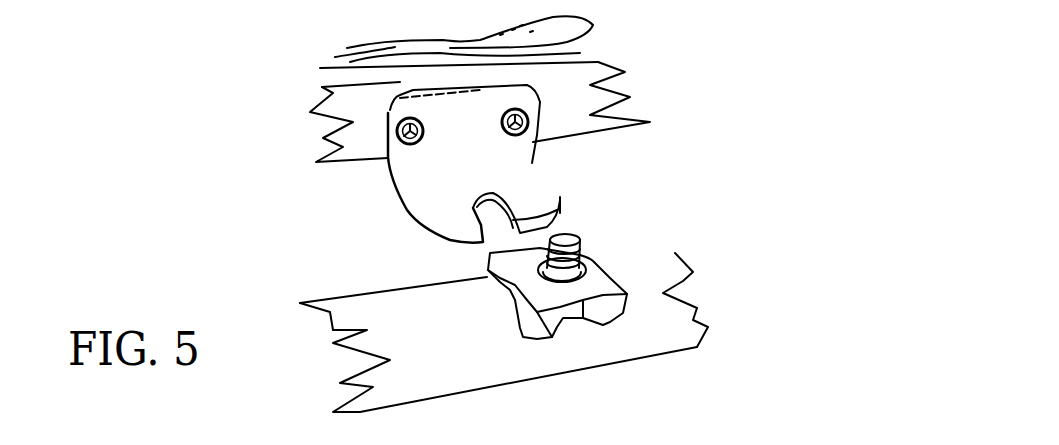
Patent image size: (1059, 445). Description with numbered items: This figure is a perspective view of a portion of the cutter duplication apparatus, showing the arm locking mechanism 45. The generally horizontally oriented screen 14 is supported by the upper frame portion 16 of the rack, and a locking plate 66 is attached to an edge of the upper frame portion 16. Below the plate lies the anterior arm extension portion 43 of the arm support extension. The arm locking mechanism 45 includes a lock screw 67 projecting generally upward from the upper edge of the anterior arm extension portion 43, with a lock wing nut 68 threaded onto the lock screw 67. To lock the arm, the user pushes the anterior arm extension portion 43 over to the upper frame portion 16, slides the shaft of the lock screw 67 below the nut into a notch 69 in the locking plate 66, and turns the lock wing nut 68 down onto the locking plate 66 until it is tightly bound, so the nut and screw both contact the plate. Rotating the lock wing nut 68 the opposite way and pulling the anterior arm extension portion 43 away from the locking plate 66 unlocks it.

The screen 14 is at (595, 45).
The upper frame portion 16 is at (568, 103).
The locking plate 66 is at (490, 164).
The notch 69 is at (497, 221).
The lock screw 67 is at (580, 262).
The lock wing nut 68 is at (593, 287).
The anterior arm extension portion 43 is at (643, 345).
The arm locking mechanism 45 is at (733, 213).